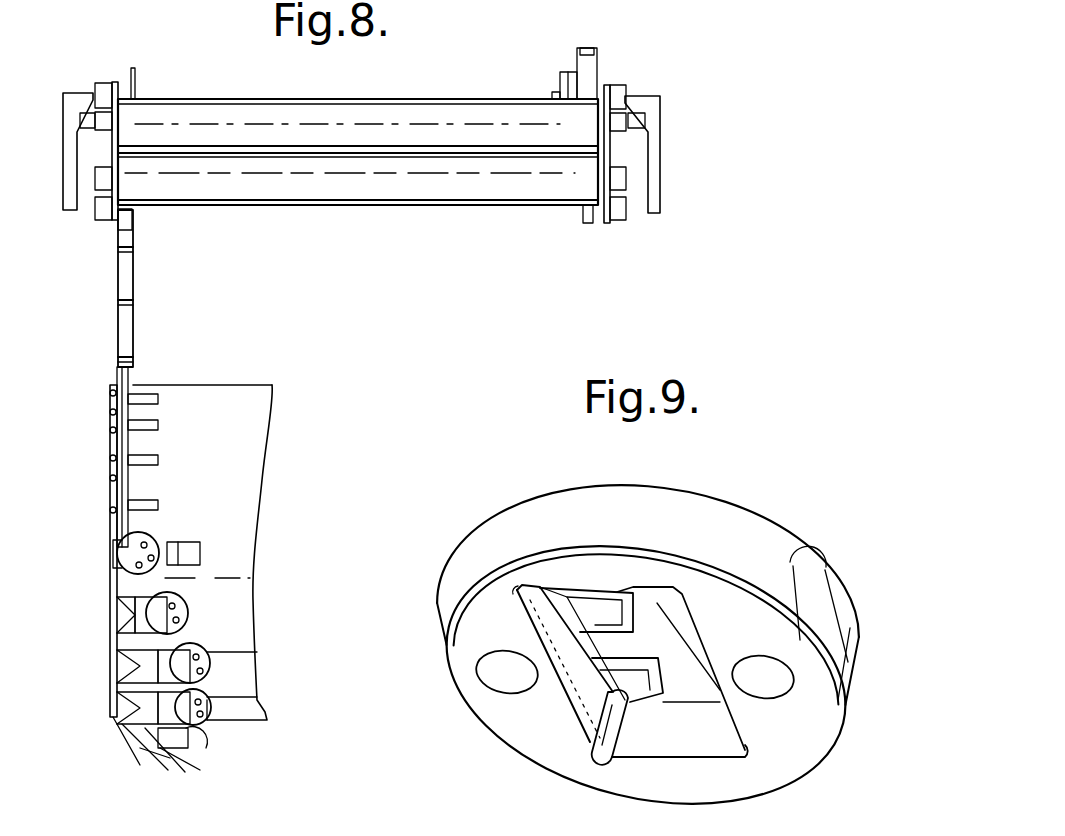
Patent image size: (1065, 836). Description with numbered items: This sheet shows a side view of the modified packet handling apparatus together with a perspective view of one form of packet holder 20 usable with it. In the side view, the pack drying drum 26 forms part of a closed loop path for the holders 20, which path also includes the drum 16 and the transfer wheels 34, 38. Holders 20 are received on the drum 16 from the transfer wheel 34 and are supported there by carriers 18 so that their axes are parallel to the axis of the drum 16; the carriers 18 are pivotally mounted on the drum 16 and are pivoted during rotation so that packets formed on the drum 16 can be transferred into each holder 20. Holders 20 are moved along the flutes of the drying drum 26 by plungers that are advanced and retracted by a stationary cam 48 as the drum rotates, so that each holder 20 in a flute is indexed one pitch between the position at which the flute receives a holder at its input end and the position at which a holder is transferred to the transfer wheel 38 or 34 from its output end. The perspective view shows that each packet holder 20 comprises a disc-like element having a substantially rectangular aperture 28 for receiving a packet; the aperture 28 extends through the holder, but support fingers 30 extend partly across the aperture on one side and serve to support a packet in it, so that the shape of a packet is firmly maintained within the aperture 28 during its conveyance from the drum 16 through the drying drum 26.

In FIG. 8, the drum 16 is at (235, 550).
In FIG. 8, the carriers 18 is at (115, 603).
In FIG. 8, the packet holder 20 is at (130, 485).
In FIG. 9, the packet holder 20 is at (535, 725).
In FIG. 8, the pack drying drum 26 is at (407, 123).
In FIG. 9, the aperture 28 is at (525, 712).
In FIG. 9, the support fingers 30 is at (652, 662).
In FIG. 8, the transfer wheel 34 is at (130, 313).
In FIG. 8, the transfer wheel 38 is at (591, 62).
In FIG. 8, the stationary cam 48 is at (75, 104).